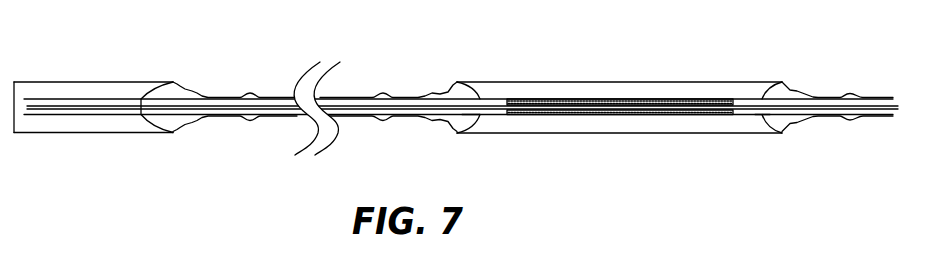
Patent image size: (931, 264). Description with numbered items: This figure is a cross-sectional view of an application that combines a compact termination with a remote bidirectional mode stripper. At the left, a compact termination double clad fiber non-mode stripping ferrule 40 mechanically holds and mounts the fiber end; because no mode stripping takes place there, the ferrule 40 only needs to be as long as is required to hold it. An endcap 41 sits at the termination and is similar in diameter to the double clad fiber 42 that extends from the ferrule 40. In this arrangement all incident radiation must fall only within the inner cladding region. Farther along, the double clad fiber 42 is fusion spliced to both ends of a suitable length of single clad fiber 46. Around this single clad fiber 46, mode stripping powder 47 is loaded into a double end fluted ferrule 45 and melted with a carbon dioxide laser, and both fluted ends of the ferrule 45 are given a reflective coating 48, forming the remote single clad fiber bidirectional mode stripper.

The compact termination double clad fiber non-mode stripping ferrule 40 is at (77, 88).
The endcap 41 is at (18, 102).
The double clad fiber 42 is at (112, 100).
The double end fluted ferrule 45 is at (644, 82).
The single clad fiber 46 is at (712, 100).
The mode stripping powder 47 is at (557, 100).
The reflective coating 48 is at (470, 117).